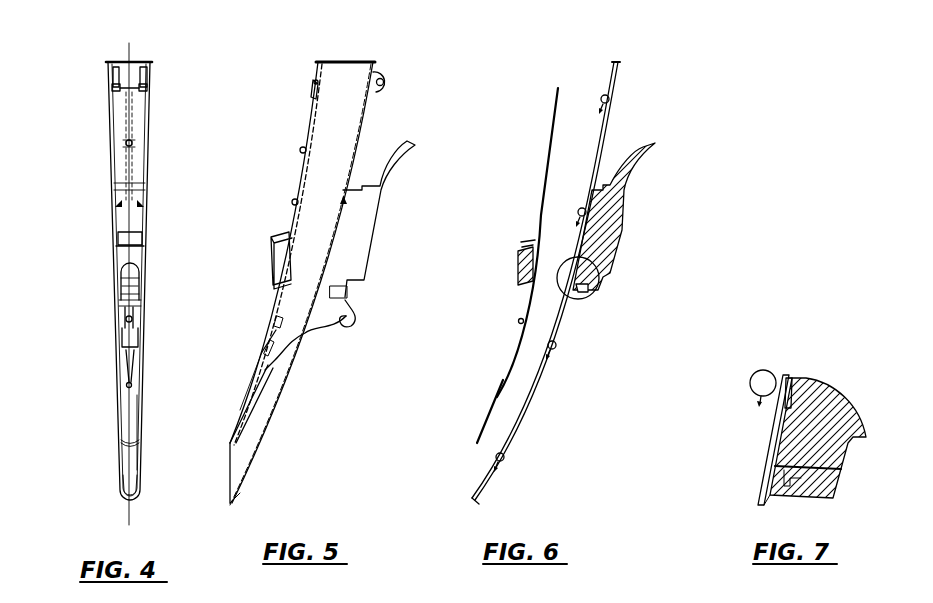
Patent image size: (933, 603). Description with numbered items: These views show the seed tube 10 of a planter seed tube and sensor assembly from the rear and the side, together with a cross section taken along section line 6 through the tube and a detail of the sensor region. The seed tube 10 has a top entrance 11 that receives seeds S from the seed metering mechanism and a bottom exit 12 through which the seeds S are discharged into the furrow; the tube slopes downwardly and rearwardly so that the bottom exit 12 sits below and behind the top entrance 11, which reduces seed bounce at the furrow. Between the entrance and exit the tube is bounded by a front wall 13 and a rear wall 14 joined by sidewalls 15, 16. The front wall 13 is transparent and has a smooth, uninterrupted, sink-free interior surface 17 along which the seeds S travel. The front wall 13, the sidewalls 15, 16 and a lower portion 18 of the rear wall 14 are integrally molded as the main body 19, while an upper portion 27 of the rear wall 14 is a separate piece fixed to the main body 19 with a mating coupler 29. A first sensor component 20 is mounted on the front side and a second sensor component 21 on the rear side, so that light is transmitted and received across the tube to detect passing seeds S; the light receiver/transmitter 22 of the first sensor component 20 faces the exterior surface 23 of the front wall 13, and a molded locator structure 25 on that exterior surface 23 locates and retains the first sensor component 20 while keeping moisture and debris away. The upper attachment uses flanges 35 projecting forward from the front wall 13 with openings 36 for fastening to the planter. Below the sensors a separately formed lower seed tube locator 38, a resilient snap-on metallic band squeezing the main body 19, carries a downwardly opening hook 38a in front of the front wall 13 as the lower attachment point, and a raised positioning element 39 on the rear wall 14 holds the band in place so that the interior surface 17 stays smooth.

In FIG. 4, the section line 6 is at (129, 43).
In FIG. 4, the seed tube 10 is at (158, 59).
In FIG. 5, the seed tube 10 is at (379, 59).
In FIG. 6, the seed tube 10 is at (623, 60).
In FIG. 4, the top entrance 11 is at (138, 62).
In FIG. 5, the top entrance 11 is at (346, 60).
In FIG. 6, the top entrance 11 is at (595, 70).
In FIG. 4, the bottom exit 12 is at (125, 476).
In FIG. 5, the bottom exit 12 is at (230, 478).
In FIG. 6, the bottom exit 12 is at (478, 471).
In FIG. 5, the front wall 13 is at (291, 423).
In FIG. 6, the front wall 13 is at (558, 362).
In FIG. 7, the front wall 13 is at (760, 505).
In FIG. 4, the rear wall 14 is at (138, 221).
In FIG. 5, the rear wall 14 is at (299, 171).
In FIG. 6, the rear wall 14 is at (553, 133).
In FIG. 4, the sidewall 15 is at (146, 176).
In FIG. 4, the sidewall 16 is at (115, 180).
In FIG. 6, the interior surface 17 is at (594, 154).
In FIG. 7, the interior surface 17 is at (763, 430).
In FIG. 4, the lower portion of the rear wall 18 is at (125, 418).
In FIG. 5, the lower portion of the rear wall 18 is at (251, 400).
In FIG. 6, the lower portion of the rear wall 18 is at (490, 411).
In FIG. 4, the main body 19 is at (141, 424).
In FIG. 5, the main body 19 is at (287, 381).
In FIG. 5, the first sensor component 20 is at (358, 235).
In FIG. 6, the first sensor component 20 is at (616, 230).
In FIG. 7, the first sensor component 20 is at (851, 417).
In FIG. 4, the second sensor component 21 is at (118, 282).
In FIG. 5, the second sensor component 21 is at (276, 258).
In FIG. 6, the second sensor component 21 is at (518, 284).
In FIG. 7, the light receiver/transmitter 22 is at (779, 418).
In FIG. 7, the exterior surface 23 is at (771, 488).
In FIG. 7, the locator structure 25 is at (791, 404).
In FIG. 4, the upper portion of the rear wall 27 is at (121, 106).
In FIG. 5, the upper portion of the rear wall 27 is at (308, 116).
In FIG. 4, the mating coupler 29 is at (112, 85).
In FIG. 5, the mating coupler 29 is at (311, 94).
In FIG. 5, the flange 35 is at (386, 93).
In FIG. 5, the opening 36 is at (392, 83).
In FIG. 4, the lower seed tube locator 38 is at (121, 340).
In FIG. 5, the lower seed tube locator 38 is at (301, 324).
In FIG. 5, the hook 38a is at (353, 322).
In FIG. 5, the raised positioning element 39 is at (275, 320).
In FIG. 6, the raised positioning element 39 is at (519, 323).
In FIG. 6, the seed S is at (598, 91).
In FIG. 7, the seed S is at (750, 382).